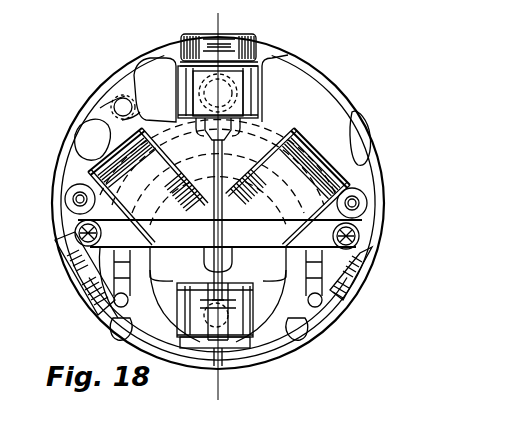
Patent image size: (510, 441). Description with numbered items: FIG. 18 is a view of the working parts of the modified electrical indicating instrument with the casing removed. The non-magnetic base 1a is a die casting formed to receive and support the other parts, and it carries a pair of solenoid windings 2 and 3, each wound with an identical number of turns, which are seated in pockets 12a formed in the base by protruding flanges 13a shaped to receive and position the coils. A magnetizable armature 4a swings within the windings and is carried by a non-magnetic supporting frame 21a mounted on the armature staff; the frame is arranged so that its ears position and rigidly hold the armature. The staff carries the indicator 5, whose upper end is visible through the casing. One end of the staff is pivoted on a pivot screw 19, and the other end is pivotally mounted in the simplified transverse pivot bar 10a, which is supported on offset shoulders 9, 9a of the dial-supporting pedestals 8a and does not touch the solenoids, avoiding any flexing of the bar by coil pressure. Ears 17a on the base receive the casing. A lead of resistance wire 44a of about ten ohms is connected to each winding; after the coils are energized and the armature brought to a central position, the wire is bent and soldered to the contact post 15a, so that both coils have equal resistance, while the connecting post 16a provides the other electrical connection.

The pivot screw 19 is at (218, 13).
The contact post 15a is at (262, 80).
The flange 13a is at (115, 115).
The pocket 12a is at (78, 140).
The solenoid winding 2 is at (100, 177).
The solenoid winding 3 is at (305, 150).
The indicator 5 is at (213, 150).
The armature 4a is at (108, 312).
The ear 17a is at (248, 38).
The resistance wire 44a is at (268, 132).
The dial-supporting pedestal 8a is at (68, 208).
The offset shoulder 9a is at (76, 238).
The offset shoulder 9 is at (360, 238).
The transverse pivot bar 10a is at (92, 292).
The supporting frame 21a is at (298, 348).
The connecting post 16a is at (246, 348).
The base 1a is at (305, 340).